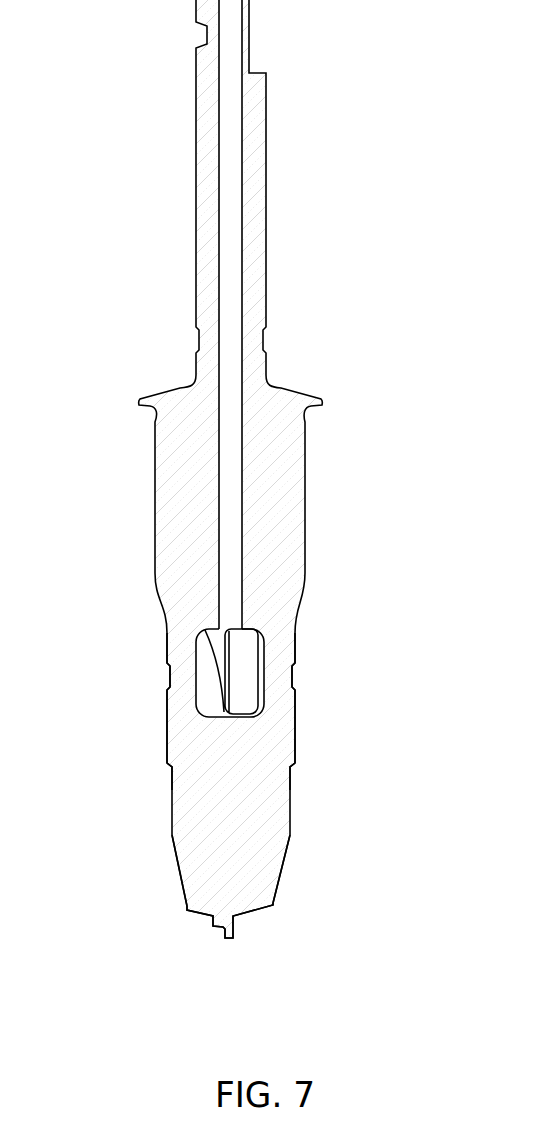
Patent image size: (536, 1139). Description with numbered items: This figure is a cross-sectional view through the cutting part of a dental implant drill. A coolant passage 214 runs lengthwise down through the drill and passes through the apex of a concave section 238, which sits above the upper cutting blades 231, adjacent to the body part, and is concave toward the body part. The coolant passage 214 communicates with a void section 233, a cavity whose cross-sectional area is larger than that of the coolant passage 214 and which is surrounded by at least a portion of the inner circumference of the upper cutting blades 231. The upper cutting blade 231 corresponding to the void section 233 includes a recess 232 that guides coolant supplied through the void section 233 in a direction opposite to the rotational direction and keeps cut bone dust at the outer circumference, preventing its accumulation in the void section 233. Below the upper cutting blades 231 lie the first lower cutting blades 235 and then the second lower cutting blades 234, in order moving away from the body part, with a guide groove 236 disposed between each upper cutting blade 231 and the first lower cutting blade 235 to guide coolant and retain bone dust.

The coolant passage 214 is at (228, 238).
The upper cutting blades 231 is at (293, 735).
The recess 232 is at (293, 678).
The void section 233 is at (207, 683).
The second lower cutting blades 234 is at (274, 902).
The first lower cutting blades 235 is at (282, 868).
The guide groove 236 is at (288, 782).
The concave section 238 is at (252, 625).